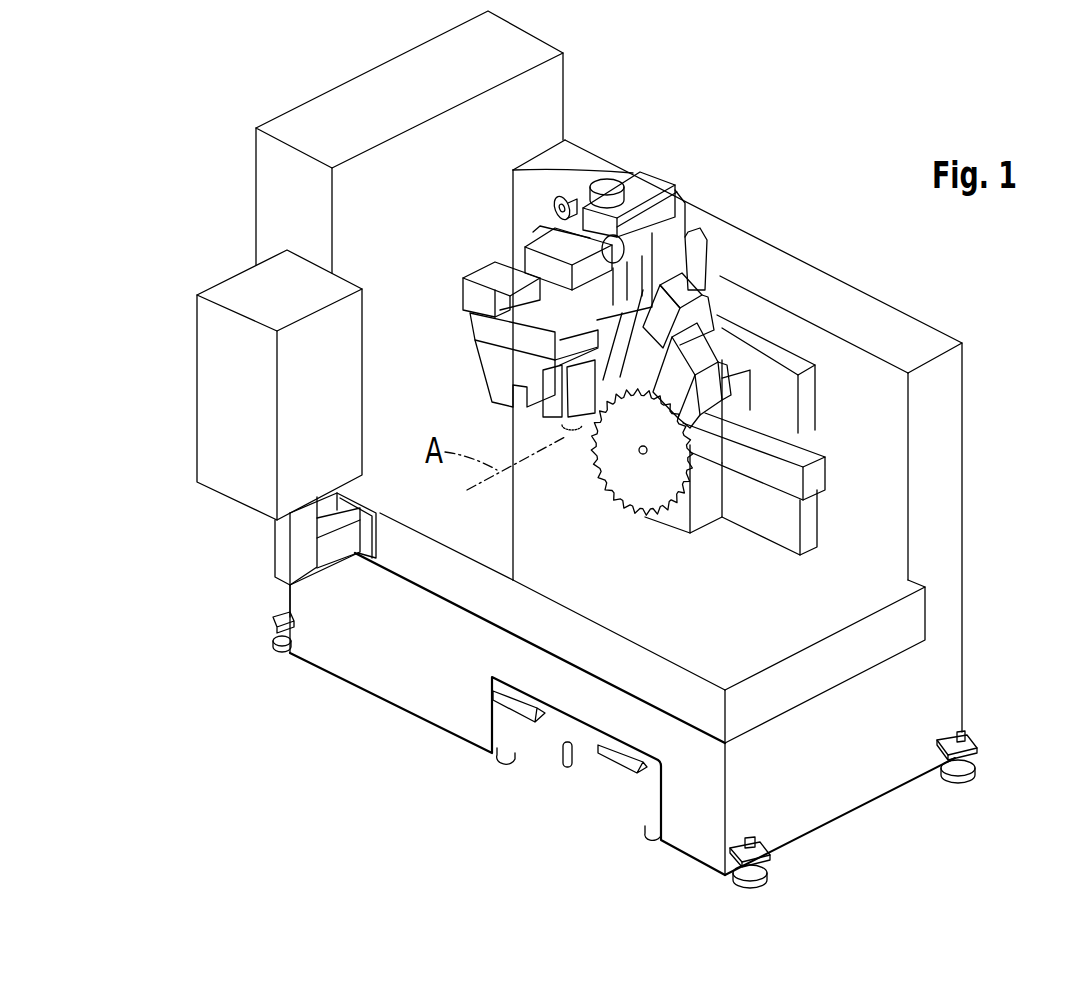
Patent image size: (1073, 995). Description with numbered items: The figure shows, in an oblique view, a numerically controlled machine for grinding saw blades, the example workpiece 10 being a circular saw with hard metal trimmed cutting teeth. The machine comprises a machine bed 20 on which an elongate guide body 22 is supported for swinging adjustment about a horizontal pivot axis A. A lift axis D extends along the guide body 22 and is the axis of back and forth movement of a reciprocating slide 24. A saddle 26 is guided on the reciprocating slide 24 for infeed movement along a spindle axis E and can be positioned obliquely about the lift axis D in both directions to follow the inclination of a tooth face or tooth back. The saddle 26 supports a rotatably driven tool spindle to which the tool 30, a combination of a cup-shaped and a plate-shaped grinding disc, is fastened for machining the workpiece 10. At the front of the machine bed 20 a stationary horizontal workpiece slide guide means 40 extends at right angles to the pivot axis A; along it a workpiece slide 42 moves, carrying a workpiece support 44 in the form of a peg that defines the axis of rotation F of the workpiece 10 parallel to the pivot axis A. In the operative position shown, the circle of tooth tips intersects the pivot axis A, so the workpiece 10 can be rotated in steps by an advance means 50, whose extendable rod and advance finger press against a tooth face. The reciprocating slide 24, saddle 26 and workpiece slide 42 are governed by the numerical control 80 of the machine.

The workpiece 10 is at (638, 487).
The machine bed 20 is at (968, 526).
The guide body 22 is at (712, 248).
The reciprocating slide 24 is at (655, 247).
The saddle 26 is at (500, 367).
The tool 30 is at (580, 420).
The workpiece slide guide means 40 is at (772, 523).
The workpiece slide 42 is at (702, 513).
The workpiece support 44 is at (638, 452).
The advance means 50 is at (717, 308).
The numerical control 80 is at (243, 482).